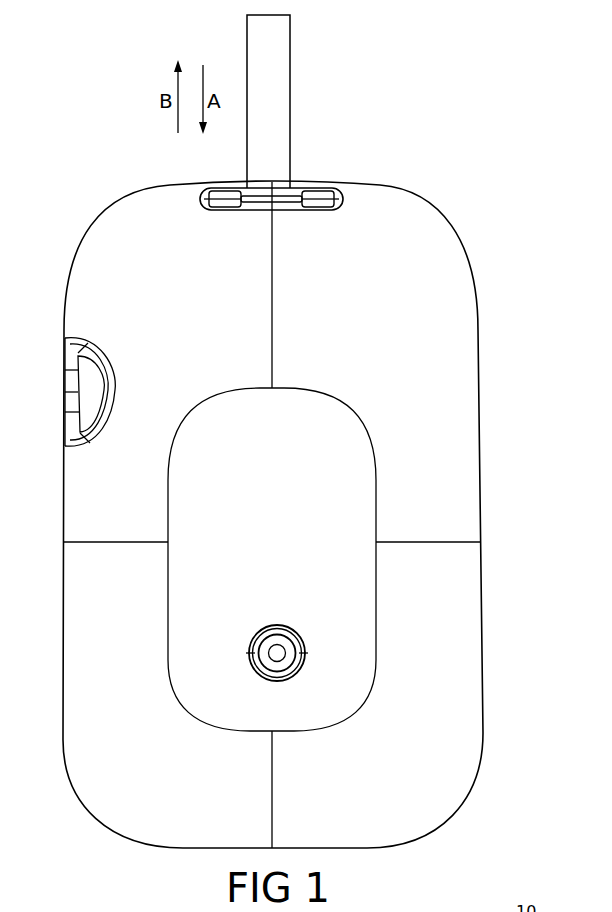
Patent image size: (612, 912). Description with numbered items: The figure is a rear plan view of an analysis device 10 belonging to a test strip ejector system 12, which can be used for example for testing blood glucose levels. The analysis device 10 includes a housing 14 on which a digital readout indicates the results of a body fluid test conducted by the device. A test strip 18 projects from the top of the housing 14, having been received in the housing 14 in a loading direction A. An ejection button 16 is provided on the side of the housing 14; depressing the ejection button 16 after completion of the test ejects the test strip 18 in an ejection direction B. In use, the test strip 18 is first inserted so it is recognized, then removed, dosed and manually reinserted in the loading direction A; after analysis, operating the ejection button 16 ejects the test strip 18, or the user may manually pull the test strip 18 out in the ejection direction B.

The analysis device 10 is at (486, 219).
The test strip ejector system 12 is at (412, 120).
The housing 14 is at (461, 307).
The ejection button 16 is at (90, 389).
The test strip 18 is at (281, 63).